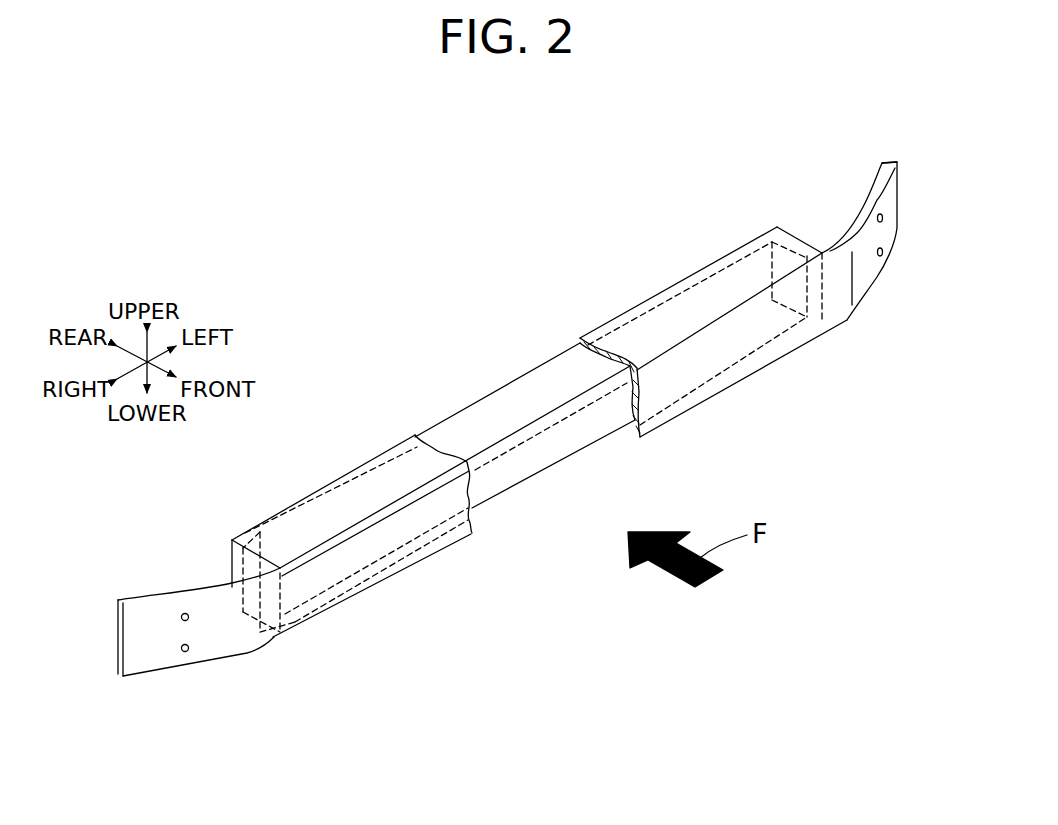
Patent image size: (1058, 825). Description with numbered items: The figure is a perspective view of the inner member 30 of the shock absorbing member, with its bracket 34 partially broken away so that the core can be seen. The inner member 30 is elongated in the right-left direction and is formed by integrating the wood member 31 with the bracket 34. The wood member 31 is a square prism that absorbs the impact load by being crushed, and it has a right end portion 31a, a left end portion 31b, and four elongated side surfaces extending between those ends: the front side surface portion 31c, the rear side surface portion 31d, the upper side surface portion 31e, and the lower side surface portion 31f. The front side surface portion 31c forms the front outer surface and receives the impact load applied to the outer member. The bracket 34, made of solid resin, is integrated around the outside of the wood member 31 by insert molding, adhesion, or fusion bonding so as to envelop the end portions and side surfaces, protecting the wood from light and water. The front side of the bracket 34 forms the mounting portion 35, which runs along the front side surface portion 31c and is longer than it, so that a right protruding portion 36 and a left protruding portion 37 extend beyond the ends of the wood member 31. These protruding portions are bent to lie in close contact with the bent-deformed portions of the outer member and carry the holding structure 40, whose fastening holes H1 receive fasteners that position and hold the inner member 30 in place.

The inner member 30 is at (750, 200).
The wood member 31 is at (533, 377).
The right end portion 31a is at (240, 567).
The left end portion 31b is at (807, 256).
The front side surface portion 31c is at (552, 443).
The rear side surface portion 31d is at (493, 423).
The upper side surface portion 31e is at (260, 533).
The lower side surface portion 31f is at (263, 642).
The bracket 34 is at (322, 485).
The mounting portion 35 is at (867, 268).
The right protruding portion 36 is at (140, 638).
The left protruding portion 37 is at (880, 181).
The holding structure 40 is at (862, 198).
The fastening hole H1 is at (884, 218).